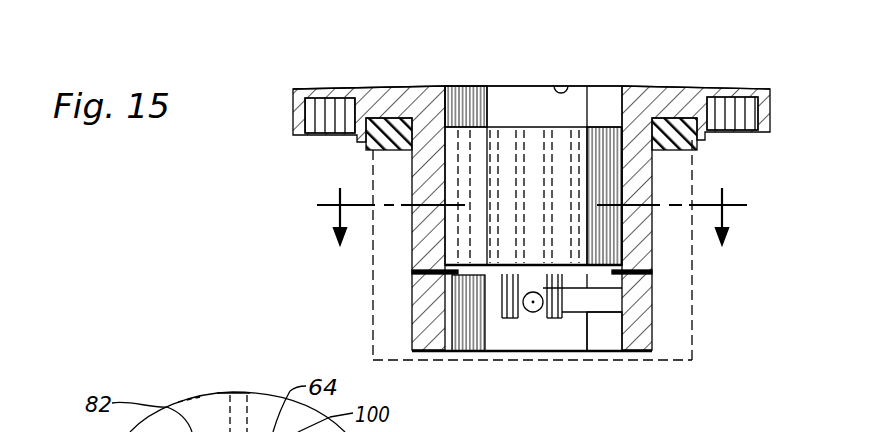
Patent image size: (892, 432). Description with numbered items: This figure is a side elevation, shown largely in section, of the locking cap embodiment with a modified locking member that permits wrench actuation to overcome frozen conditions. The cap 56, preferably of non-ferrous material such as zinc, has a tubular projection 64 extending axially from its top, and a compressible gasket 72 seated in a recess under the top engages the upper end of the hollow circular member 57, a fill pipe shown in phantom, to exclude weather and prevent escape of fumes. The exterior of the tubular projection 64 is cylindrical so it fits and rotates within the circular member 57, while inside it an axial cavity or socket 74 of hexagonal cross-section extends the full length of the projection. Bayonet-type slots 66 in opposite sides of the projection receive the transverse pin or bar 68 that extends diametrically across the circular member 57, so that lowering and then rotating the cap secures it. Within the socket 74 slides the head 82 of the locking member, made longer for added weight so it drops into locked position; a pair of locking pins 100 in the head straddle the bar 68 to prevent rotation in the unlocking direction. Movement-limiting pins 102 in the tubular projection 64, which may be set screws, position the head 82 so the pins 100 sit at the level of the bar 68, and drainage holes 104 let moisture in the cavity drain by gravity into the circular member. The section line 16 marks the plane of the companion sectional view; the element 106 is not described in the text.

The section line 16 is at (532, 201).
The cap 56 is at (692, 80).
The hollow circular member 57 is at (695, 317).
The tubular projection 64 is at (417, 320).
The bayonet-type slots 66 is at (590, 312).
The transverse pin or bar 68 is at (535, 312).
The compressible gasket 72 is at (386, 120).
The axial cavity or socket 74 is at (572, 87).
The head of the locking member 82 is at (505, 127).
The locking pins 100 is at (509, 320).
The movement-limiting pins 102 is at (417, 275).
The drainage holes 104 is at (600, 127).
The cover plate 106 is at (532, 82).